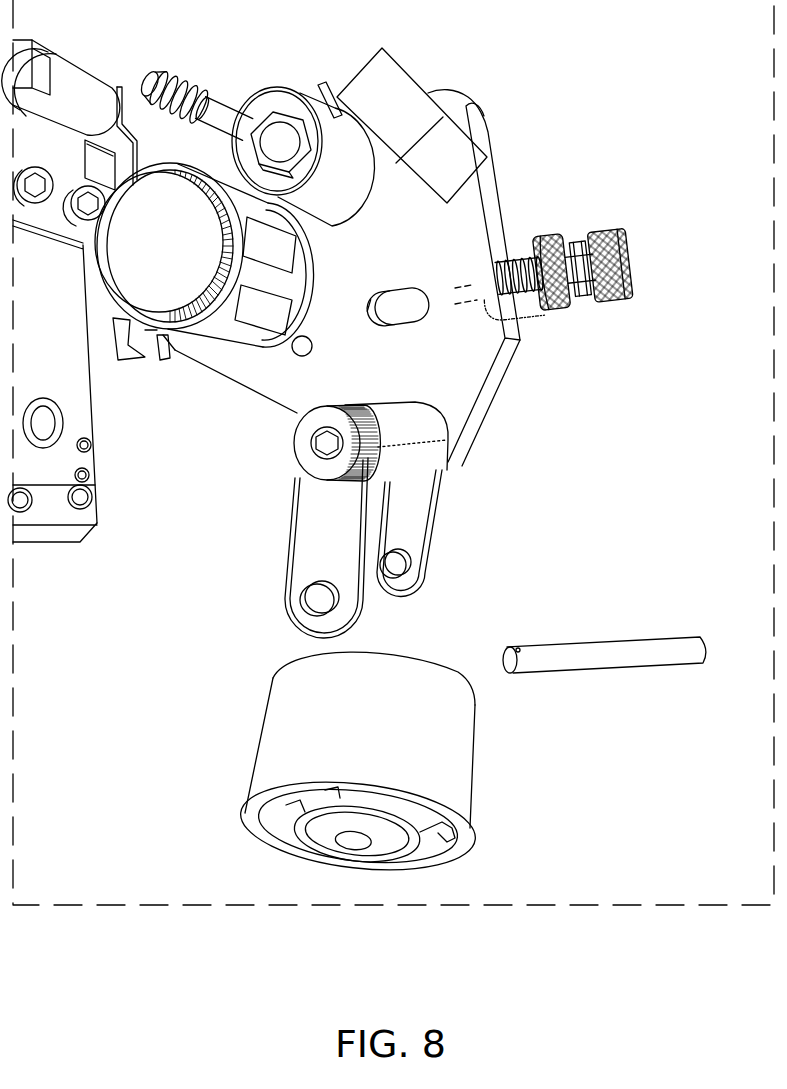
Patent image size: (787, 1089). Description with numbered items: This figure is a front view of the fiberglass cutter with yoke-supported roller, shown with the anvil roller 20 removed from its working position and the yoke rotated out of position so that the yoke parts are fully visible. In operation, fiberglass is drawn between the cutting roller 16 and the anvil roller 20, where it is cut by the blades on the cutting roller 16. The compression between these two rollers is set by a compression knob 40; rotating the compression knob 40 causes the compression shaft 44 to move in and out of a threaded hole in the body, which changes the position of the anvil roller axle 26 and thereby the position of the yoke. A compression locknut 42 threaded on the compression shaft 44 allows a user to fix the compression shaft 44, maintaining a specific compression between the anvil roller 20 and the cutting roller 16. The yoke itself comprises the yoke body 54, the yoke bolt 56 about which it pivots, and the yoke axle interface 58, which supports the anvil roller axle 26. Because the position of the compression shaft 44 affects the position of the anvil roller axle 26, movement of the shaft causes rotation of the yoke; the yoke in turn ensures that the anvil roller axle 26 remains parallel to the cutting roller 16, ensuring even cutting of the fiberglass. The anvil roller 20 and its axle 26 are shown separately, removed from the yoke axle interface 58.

The cutting roller 16 is at (248, 316).
The anvil roller 20 is at (377, 747).
The anvil roller axle 26 is at (610, 648).
The compression knob 40 is at (638, 270).
The compression locknut 42 is at (548, 240).
The compression shaft 44 is at (510, 268).
The yoke body 54 is at (409, 520).
The yoke bolt 56 is at (315, 443).
The yoke axle interface 58 is at (332, 596).